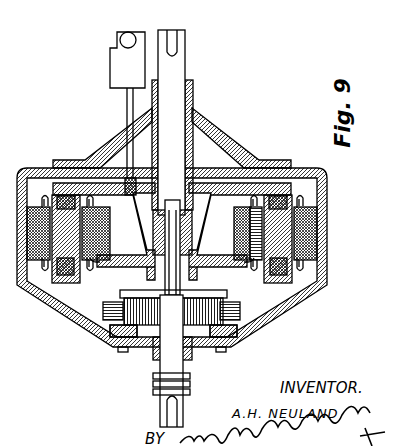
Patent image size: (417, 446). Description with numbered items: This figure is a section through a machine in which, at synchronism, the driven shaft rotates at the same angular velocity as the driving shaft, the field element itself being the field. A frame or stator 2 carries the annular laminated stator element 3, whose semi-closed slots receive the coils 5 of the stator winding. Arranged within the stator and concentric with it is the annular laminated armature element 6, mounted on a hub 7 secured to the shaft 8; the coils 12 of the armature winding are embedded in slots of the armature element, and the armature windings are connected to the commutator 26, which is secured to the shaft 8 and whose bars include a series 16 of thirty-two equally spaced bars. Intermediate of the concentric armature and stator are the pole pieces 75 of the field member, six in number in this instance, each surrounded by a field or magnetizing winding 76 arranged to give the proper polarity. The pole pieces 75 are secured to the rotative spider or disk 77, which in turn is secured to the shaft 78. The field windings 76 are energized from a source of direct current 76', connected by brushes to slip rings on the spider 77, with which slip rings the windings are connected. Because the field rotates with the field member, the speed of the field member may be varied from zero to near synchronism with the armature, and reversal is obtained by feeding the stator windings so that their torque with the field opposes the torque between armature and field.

The frame or stator 2 is at (72, 322).
The laminated stator element 3 is at (310, 228).
The coils of the stator winding 5 is at (298, 142).
The laminated armature element 6 is at (93, 257).
The hub 7 is at (172, 239).
The shaft 8 is at (182, 397).
The coils of the armature winding 12 is at (80, 165).
The series of commutator bars 16 is at (173, 331).
The commutator 26 is at (110, 302).
The pole pieces 75 is at (62, 222).
The field or magnetizing winding 76 is at (167, 316).
The source of direct current 76' is at (107, 51).
The spider or disk 77 is at (115, 183).
The shaft 78 is at (172, 122).